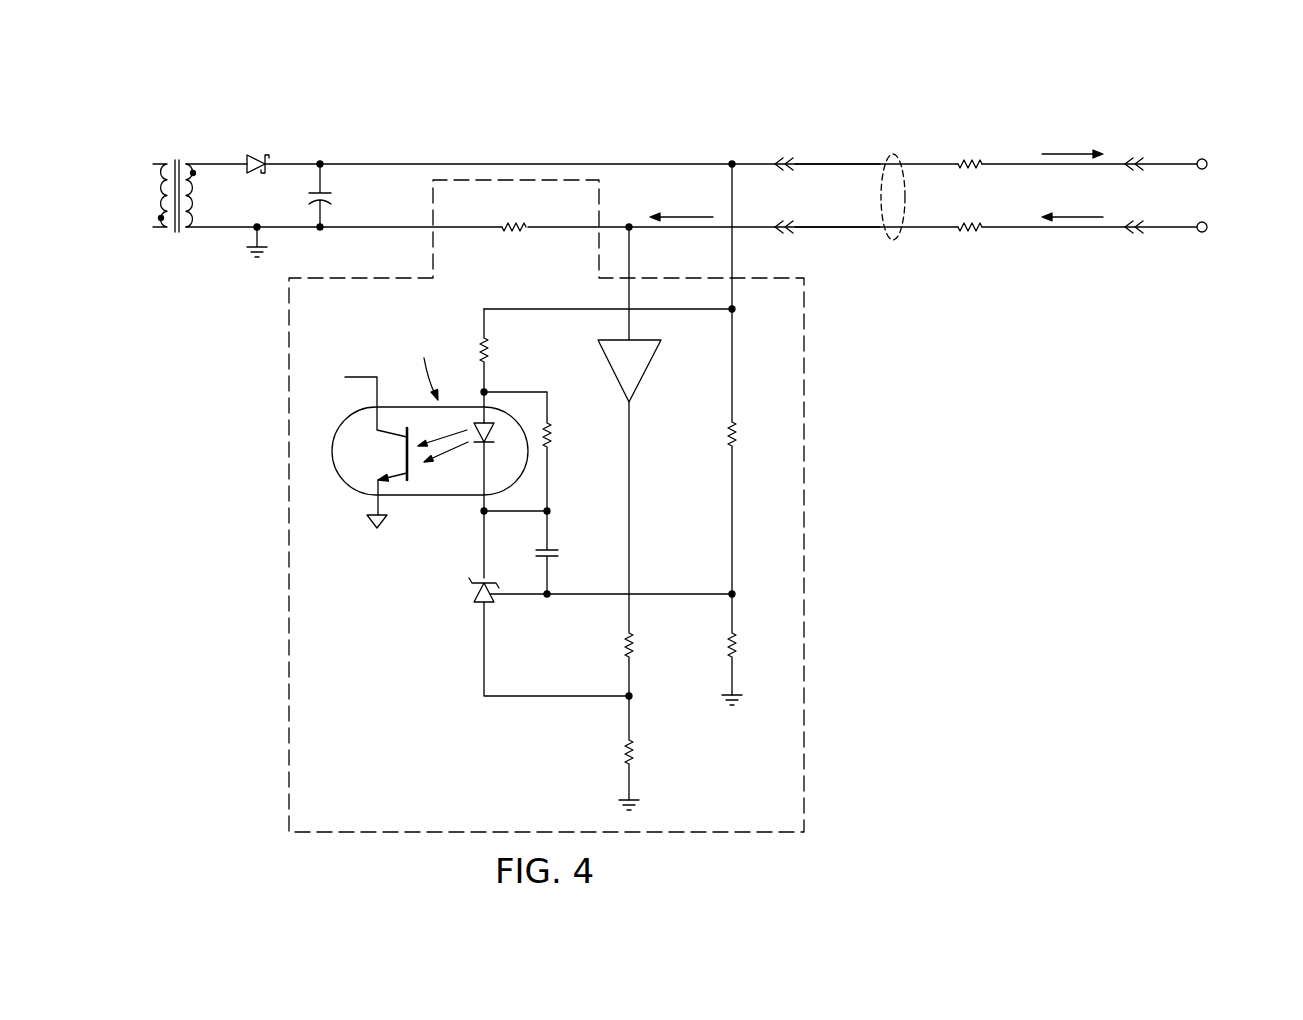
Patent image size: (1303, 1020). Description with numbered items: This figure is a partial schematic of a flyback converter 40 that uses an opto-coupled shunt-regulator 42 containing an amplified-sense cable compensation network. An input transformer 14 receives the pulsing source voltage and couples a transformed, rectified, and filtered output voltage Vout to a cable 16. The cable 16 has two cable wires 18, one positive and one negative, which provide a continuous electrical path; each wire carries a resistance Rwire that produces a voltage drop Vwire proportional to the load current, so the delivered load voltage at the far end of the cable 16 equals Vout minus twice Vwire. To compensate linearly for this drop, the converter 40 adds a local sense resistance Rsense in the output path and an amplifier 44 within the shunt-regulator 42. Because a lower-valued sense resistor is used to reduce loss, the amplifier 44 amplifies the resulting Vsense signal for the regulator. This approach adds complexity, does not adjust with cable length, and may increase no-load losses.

The input transformer 14 is at (174, 148).
The cable 16 is at (896, 156).
The cable wires 18 is at (826, 162).
The flyback converter 40 is at (451, 87).
The opto-coupled shunt-regulator 42 is at (427, 768).
The amplifier 44 is at (648, 372).